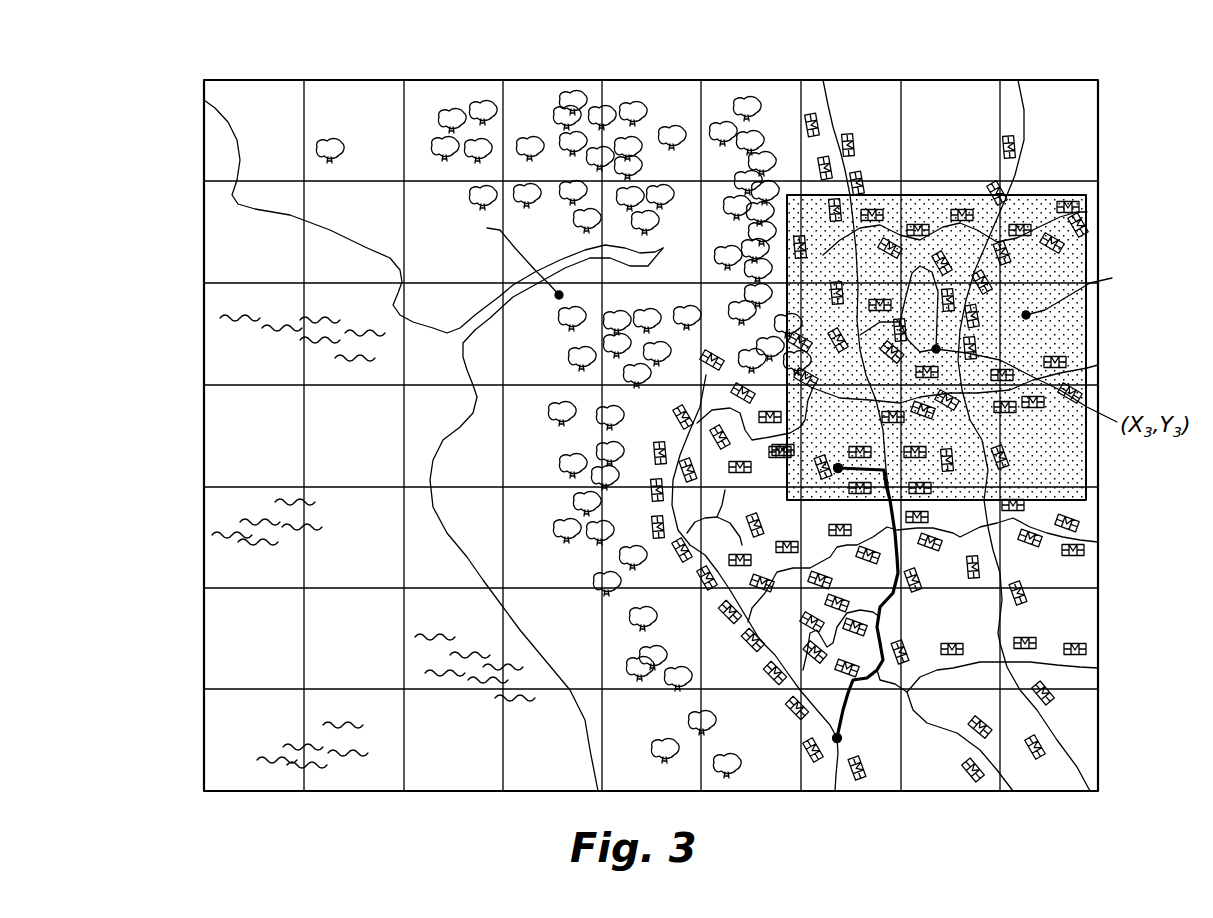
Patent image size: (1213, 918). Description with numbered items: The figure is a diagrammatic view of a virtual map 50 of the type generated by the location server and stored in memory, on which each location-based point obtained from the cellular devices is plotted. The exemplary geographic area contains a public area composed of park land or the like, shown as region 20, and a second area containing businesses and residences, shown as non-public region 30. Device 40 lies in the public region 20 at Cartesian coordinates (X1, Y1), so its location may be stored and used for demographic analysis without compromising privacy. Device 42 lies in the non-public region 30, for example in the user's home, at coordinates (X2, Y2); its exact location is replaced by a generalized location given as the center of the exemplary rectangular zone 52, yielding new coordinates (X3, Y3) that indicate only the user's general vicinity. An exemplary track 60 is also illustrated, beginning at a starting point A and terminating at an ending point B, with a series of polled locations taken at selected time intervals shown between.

The region 20 is at (651, 415).
The region 30 is at (975, 355).
The device 40 is at (485, 302).
The device 42 is at (1106, 319).
The virtual map 50 is at (599, 448).
The rectangular zone 52 is at (975, 355).
The track 60 is at (901, 595).